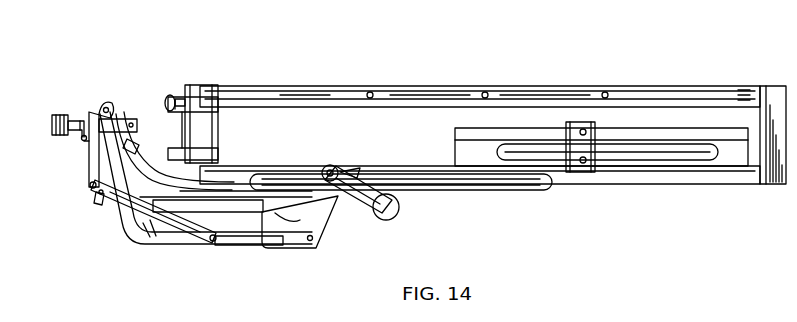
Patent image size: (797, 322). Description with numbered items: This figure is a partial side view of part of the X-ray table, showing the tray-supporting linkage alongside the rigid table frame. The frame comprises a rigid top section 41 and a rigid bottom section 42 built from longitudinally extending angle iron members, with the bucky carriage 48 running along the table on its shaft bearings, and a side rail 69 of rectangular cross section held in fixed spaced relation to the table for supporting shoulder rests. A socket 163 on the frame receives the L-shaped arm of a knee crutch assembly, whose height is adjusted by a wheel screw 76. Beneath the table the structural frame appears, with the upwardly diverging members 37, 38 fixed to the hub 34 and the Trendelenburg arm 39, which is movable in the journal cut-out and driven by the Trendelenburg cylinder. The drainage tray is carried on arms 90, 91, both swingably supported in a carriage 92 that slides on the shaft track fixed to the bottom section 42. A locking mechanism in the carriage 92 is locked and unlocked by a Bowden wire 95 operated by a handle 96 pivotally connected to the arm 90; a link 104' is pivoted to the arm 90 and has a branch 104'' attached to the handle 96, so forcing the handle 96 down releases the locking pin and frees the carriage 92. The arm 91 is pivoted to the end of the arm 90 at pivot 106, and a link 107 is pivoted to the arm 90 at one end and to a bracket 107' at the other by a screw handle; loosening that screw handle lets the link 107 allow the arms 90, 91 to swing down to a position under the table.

The hub 34 is at (394, 220).
The upwardly diverging member 37 is at (511, 194).
The upwardly diverging member 38 is at (358, 214).
The Trendelenburg arm 39 is at (333, 167).
The rigid top section 41 is at (767, 90).
The rigid bottom section 42 is at (760, 180).
The bucky carriage 48 is at (633, 138).
The side rail 69 is at (699, 93).
The wheel screw 76 is at (170, 96).
The arm 90 is at (265, 248).
The arm 91 is at (283, 214).
The carriage 92 is at (315, 245).
The Bowden wire 95 is at (149, 174).
The handle 96 is at (55, 114).
The link 104' is at (116, 103).
The branch 104'' is at (82, 100).
The pivot 106 is at (107, 107).
The link 107 is at (153, 233).
The bracket 107' is at (63, 207).
The socket 163 is at (199, 102).